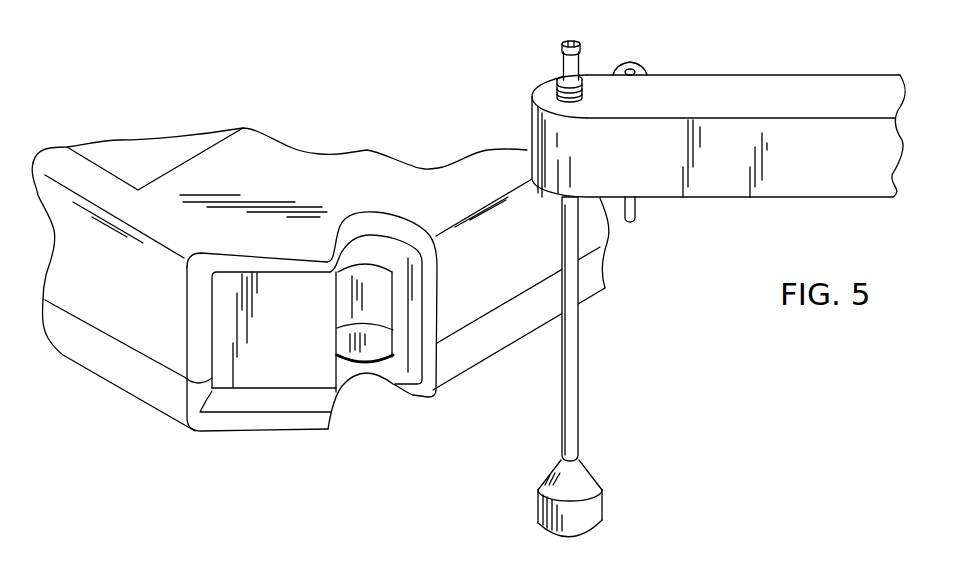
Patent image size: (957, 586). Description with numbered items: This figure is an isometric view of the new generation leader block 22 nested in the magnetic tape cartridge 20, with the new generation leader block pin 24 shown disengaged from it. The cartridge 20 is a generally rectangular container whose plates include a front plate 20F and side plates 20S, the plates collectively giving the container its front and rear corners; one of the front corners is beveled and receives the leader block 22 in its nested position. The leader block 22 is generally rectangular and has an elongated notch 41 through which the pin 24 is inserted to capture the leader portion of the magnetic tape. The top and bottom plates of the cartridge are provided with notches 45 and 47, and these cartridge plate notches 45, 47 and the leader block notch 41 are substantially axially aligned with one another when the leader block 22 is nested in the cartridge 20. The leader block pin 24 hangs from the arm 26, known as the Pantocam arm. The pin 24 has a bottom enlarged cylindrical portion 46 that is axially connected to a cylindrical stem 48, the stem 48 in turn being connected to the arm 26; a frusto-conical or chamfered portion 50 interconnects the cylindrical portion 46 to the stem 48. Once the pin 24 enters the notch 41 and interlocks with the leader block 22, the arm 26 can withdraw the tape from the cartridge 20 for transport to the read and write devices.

The magnetic tape cartridge 20 is at (288, 175).
The side plates 20S is at (117, 310).
The front plate 20F is at (500, 337).
The leader block 22 is at (257, 367).
The cartridge plate notch 45 is at (362, 222).
The leader block notch 41 is at (372, 289).
The cartridge plate notch 47 is at (372, 373).
The arm 26 is at (790, 82).
The leader block pin 24 is at (583, 368).
The cylindrical stem 48 is at (580, 412).
The frusto-conical portion 50 is at (594, 470).
The bottom enlarged cylindrical portion 46 is at (601, 517).